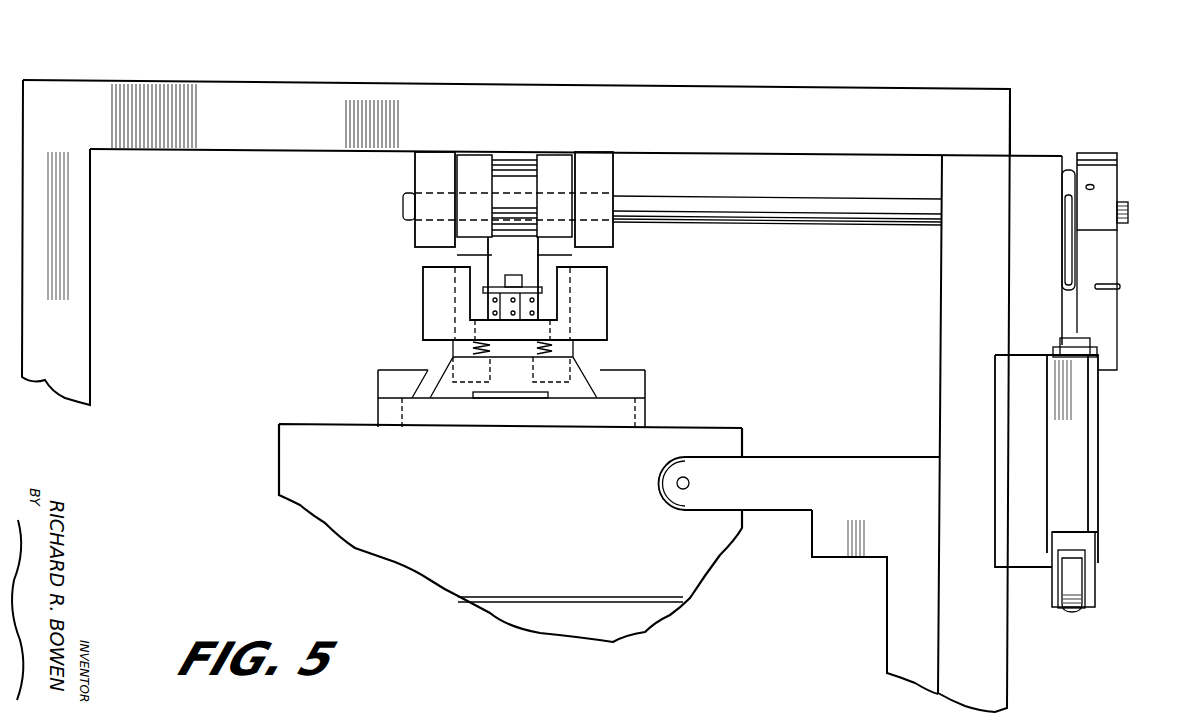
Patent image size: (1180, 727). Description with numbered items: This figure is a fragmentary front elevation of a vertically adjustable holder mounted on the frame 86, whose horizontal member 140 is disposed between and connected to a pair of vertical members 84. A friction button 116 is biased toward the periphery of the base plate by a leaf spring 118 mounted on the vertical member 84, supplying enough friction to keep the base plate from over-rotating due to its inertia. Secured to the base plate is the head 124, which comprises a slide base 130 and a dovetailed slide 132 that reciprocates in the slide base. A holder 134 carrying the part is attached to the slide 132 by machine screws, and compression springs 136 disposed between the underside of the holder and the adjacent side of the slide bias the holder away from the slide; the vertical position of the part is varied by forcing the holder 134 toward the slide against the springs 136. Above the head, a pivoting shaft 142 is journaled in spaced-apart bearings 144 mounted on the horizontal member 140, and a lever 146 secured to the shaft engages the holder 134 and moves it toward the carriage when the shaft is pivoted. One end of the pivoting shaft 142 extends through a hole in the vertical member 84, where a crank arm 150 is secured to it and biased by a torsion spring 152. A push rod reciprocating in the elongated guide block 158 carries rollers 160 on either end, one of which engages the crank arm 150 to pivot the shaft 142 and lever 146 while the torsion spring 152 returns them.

The vertical member 84 is at (90, 350).
The frame 86 is at (102, 184).
The friction button 116 is at (656, 478).
The leaf spring 118 is at (783, 495).
The head 124 is at (652, 309).
The slide base 130 is at (632, 418).
The dovetailed slide 132 is at (448, 372).
The holder 134 is at (607, 275).
The compression springs 136 is at (547, 357).
The horizontal member 140 is at (628, 100).
The pivoting shaft 142 is at (830, 207).
The bearings 144 is at (415, 238).
The lever 146 is at (458, 250).
The crank arm 150 is at (1117, 240).
The torsion spring 152 is at (1105, 289).
The elongated guide block 158 is at (1100, 442).
The rollers 160 is at (1080, 610).